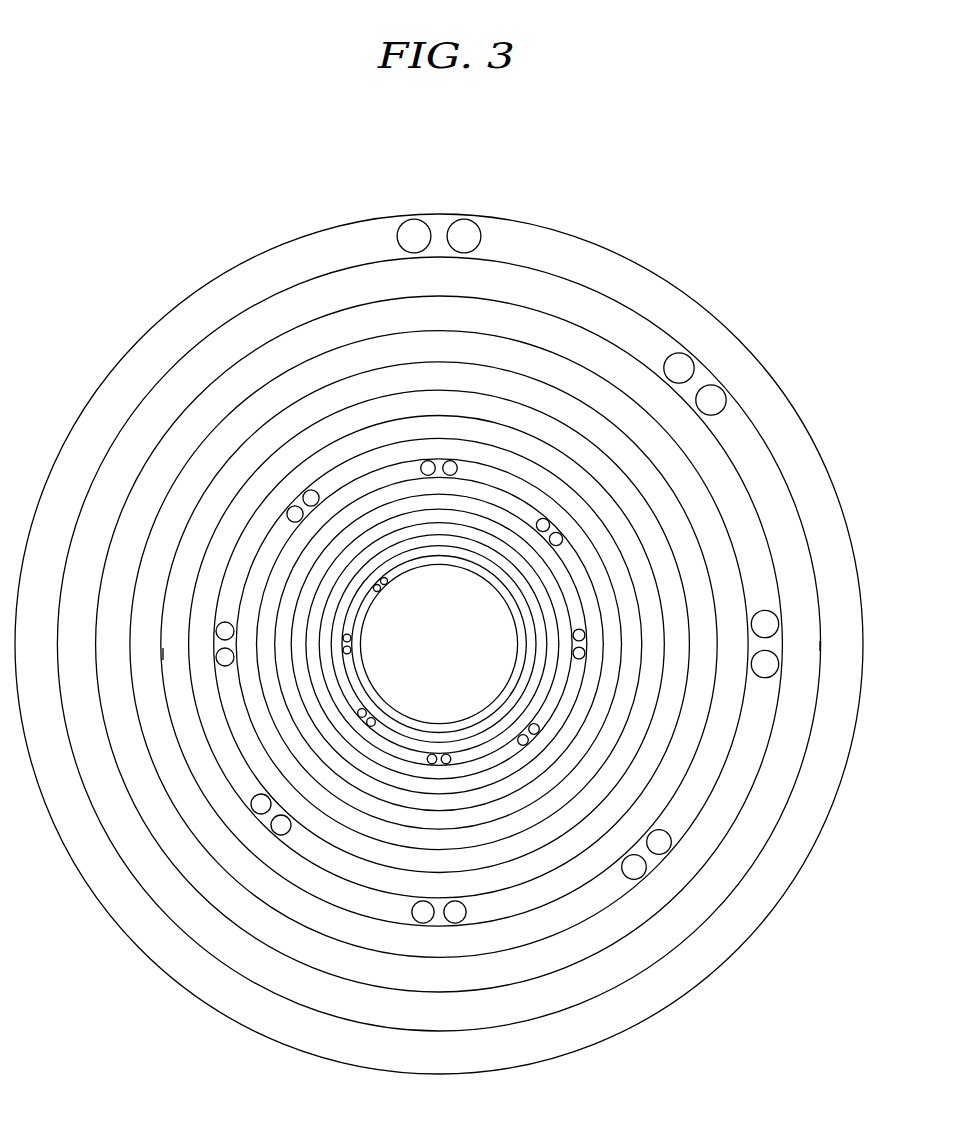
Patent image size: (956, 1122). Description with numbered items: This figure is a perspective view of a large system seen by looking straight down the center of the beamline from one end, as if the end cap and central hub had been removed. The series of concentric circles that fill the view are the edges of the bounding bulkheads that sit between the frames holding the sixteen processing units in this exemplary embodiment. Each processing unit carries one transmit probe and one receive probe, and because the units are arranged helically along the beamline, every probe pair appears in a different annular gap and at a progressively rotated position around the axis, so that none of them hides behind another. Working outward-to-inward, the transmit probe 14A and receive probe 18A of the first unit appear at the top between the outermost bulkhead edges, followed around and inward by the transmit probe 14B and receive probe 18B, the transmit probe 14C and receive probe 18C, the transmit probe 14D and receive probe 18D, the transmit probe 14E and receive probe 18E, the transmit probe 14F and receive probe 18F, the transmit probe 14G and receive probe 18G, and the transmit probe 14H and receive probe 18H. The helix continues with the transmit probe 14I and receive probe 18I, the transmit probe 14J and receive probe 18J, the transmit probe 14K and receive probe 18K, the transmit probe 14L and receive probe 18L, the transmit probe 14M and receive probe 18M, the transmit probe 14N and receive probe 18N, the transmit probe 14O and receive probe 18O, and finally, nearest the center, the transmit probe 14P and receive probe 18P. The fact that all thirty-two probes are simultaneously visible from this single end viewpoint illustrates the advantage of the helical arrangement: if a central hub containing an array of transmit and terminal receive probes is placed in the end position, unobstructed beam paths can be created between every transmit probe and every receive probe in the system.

The transmit probe 14A is at (472, 222).
The receive probe 18A is at (404, 222).
The transmit probe 14B is at (727, 400).
The receive probe 18B is at (688, 353).
The transmit probe 14C is at (779, 665).
The receive probe 18C is at (779, 622).
The transmit probe 14D is at (640, 880).
The receive probe 18D is at (670, 849).
The transmit probe 14E is at (420, 924).
The receive probe 18E is at (463, 922).
The transmit probe 14F is at (251, 804).
The receive probe 18F is at (274, 832).
The transmit probe 14G is at (216, 631).
The receive probe 18G is at (216, 660).
The transmit probe 14H is at (310, 490).
The receive probe 18H is at (287, 512).
The transmit probe 14I is at (452, 461).
The receive probe 18I is at (428, 461).
The transmit probe 14J is at (562, 541).
The receive probe 18J is at (549, 522).
The transmit probe 14K is at (585, 653).
The receive probe 18K is at (585, 635).
The transmit probe 14L is at (524, 746).
The receive probe 18L is at (537, 734).
The transmit probe 14M is at (430, 764).
The receive probe 18M is at (447, 764).
The transmit probe 14N is at (366, 710).
The receive probe 18N is at (375, 722).
The transmit probe 14O is at (352, 637).
The receive probe 18O is at (352, 650).
The transmit probe 14P is at (388, 582).
The receive probe 18P is at (380, 590).